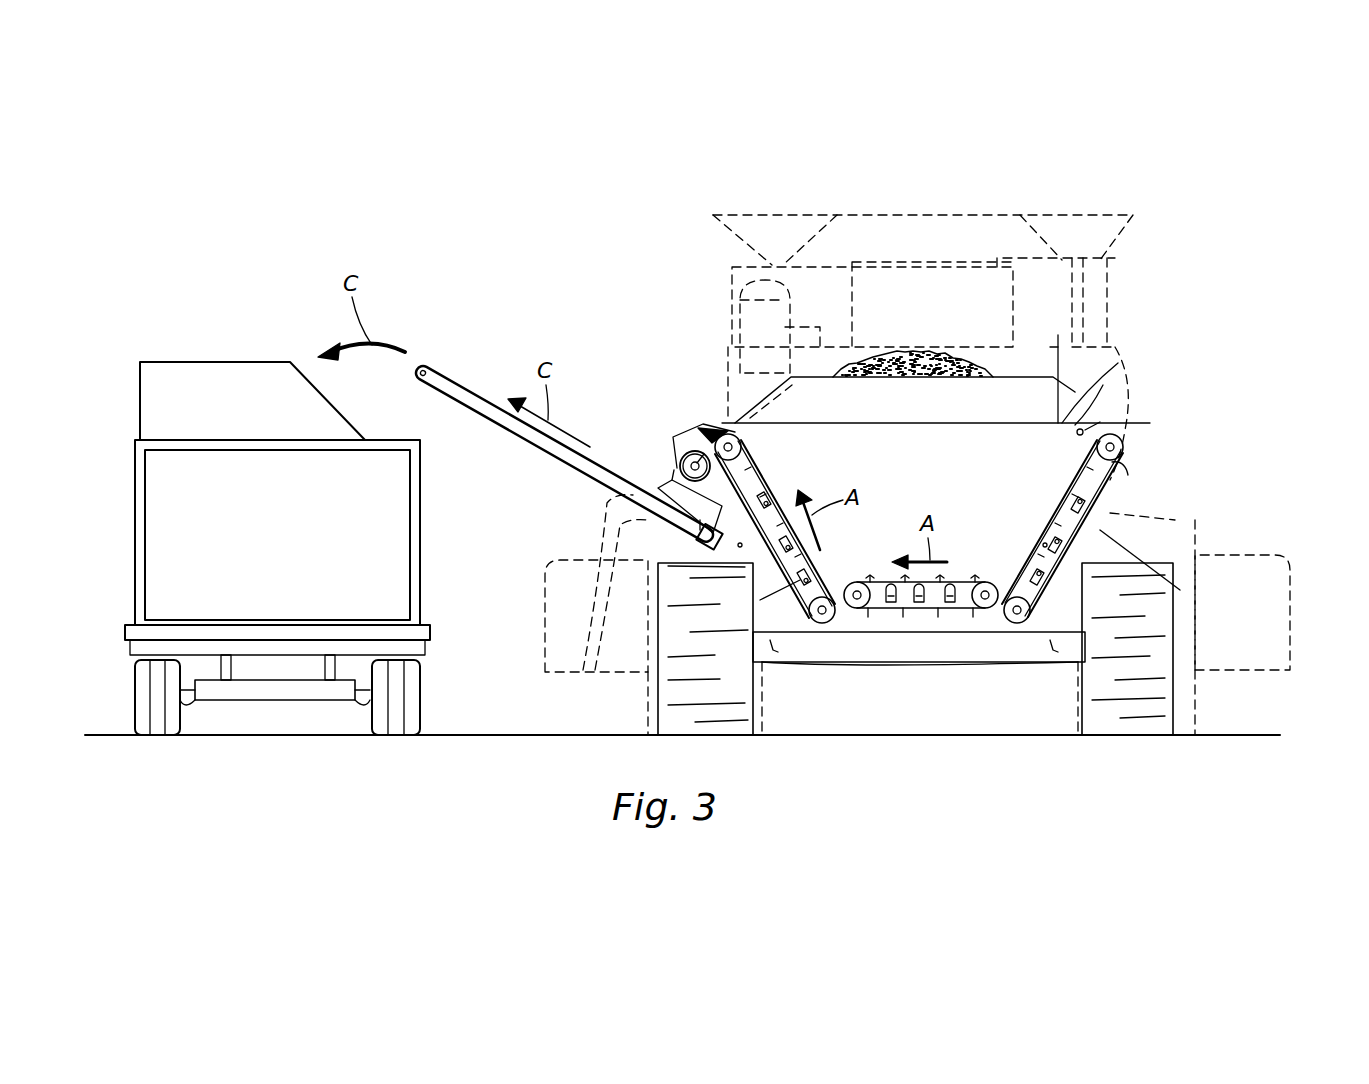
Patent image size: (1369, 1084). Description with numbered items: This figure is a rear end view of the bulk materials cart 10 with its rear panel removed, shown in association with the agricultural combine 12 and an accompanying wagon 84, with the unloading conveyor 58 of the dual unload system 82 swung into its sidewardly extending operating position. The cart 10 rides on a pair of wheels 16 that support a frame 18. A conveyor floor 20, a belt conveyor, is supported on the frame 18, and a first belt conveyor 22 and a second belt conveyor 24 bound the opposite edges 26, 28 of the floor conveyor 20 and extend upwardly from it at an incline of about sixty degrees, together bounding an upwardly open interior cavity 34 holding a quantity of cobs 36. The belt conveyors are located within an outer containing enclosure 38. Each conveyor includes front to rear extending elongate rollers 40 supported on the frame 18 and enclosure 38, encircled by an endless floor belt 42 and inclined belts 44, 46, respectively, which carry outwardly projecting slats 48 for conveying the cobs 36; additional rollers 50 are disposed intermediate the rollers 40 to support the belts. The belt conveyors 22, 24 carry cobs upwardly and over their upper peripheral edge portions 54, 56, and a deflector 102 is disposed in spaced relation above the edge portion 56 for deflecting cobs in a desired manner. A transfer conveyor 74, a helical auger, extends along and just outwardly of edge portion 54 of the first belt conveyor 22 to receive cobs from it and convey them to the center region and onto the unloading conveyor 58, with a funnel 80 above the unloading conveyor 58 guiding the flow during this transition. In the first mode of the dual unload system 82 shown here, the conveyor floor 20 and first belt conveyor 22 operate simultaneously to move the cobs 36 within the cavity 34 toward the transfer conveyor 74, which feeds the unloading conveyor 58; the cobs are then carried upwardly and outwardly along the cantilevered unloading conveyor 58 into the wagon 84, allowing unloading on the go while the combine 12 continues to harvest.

The bulk materials cart 10 is at (1243, 373).
The agricultural combine 12 is at (1110, 268).
The wheels 16 is at (655, 710).
The frame 18 is at (967, 670).
The conveyor floor 20 is at (960, 578).
The first belt conveyor 22 is at (766, 440).
The second belt conveyor 24 is at (1058, 352).
The edge of floor conveyor 26 is at (846, 582).
The edge of floor conveyor 28 is at (990, 582).
The interior cavity 34 is at (932, 462).
The cobs 36 is at (912, 352).
The outer containing enclosure 38 is at (1128, 487).
The rollers 40 is at (728, 432).
The floor belt 42 is at (886, 634).
The inclined belt 44 is at (790, 592).
The inclined belt 46 is at (1092, 525).
The slats 48 is at (764, 490).
The additional rollers 50 is at (770, 535).
The upper peripheral edge portion 54 is at (708, 430).
The upper peripheral edge portion 56 is at (1118, 425).
The unloading conveyor 58 is at (460, 368).
The transfer conveyor 74 is at (678, 458).
The funnel 80 is at (640, 488).
The dual unload system 82 is at (1195, 388).
The wagon 84 is at (135, 542).
The deflector 102 is at (1105, 385).